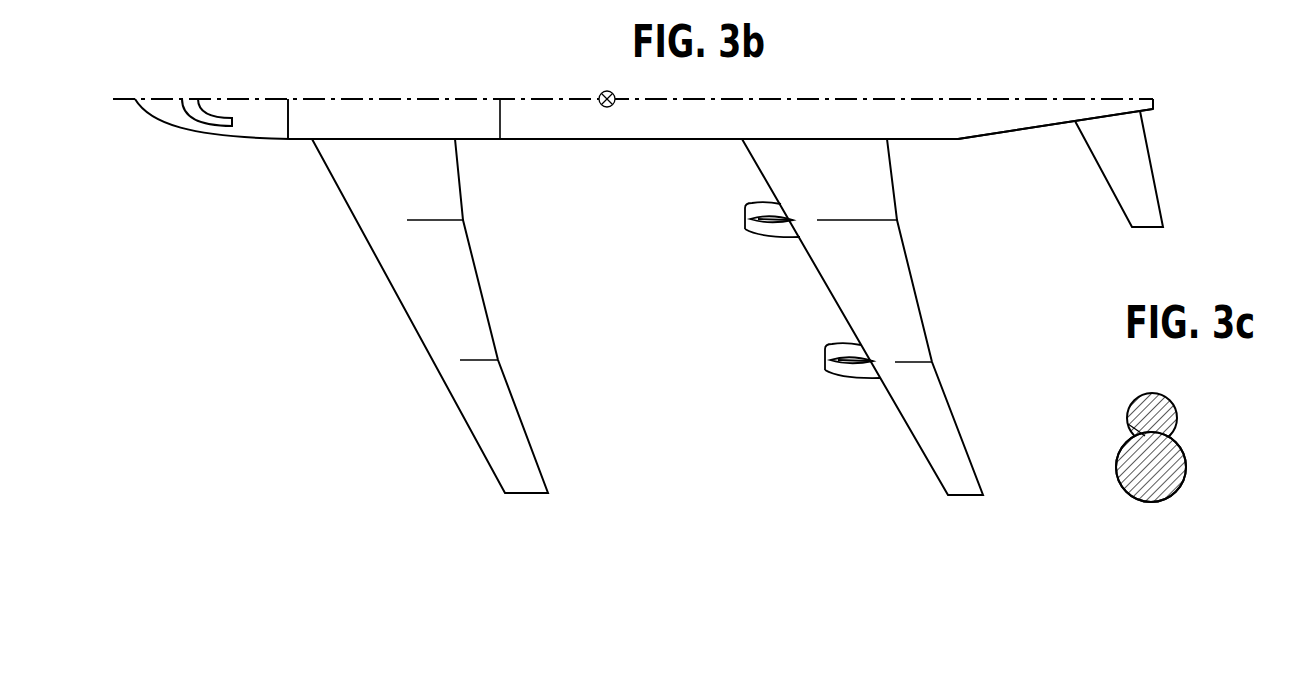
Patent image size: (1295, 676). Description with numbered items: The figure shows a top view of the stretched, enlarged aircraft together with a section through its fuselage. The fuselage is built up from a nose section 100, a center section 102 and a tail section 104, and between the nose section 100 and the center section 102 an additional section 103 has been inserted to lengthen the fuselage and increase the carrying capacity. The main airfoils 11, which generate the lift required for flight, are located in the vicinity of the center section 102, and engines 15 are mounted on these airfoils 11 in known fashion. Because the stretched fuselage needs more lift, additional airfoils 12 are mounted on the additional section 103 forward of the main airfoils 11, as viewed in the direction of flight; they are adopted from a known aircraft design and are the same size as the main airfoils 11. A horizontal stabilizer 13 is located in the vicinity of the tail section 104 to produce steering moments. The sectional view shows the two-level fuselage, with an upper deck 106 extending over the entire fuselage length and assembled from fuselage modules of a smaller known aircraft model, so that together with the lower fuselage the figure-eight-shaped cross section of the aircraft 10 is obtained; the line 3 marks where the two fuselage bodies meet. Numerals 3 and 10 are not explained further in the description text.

In FIG. 3c, the junction line between upper and lower fuselage 3 is at (1135, 428).
In FIG. 3c, the aircraft 10 is at (1187, 458).
In FIG. 3b, the airfoils 11 is at (912, 312).
In FIG. 3b, the additional airfoils 12 is at (475, 295).
In FIG. 3b, the horizontal stabilizer 13 is at (1150, 198).
In FIG. 3b, the engines 15 is at (846, 380).
In FIG. 3b, the nose section 100 is at (178, 133).
In FIG. 3b, the center section 102 is at (651, 141).
In FIG. 3c, the center section 102 is at (1204, 467).
In FIG. 3b, the additional section 103 is at (301, 141).
In FIG. 3b, the tail section 104 is at (1049, 118).
In FIG. 3c, the upper deck 106 is at (1178, 418).